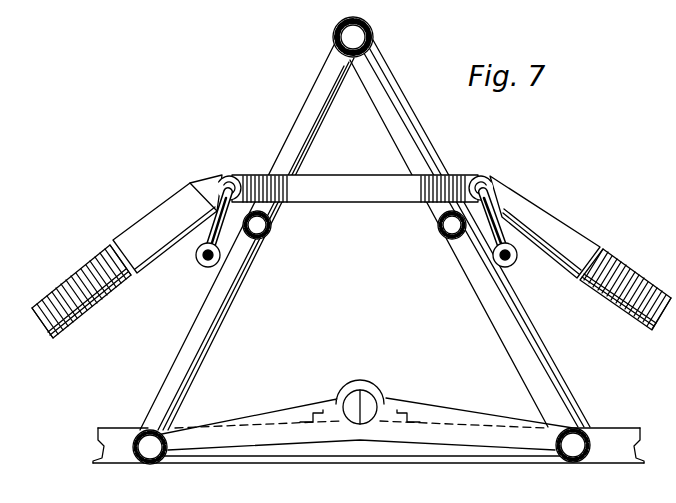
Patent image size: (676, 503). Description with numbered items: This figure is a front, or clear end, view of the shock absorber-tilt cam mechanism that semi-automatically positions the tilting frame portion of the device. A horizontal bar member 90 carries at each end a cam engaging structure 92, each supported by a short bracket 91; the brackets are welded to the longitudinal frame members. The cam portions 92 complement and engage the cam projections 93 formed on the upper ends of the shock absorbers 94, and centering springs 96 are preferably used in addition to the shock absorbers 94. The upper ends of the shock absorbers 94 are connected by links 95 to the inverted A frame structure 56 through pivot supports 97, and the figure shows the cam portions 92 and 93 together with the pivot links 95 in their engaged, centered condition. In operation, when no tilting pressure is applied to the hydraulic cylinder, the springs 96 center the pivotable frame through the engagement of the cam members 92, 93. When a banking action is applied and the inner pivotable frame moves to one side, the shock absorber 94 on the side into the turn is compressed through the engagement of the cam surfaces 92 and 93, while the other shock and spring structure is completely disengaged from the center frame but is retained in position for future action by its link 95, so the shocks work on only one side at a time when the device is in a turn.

The inverted A frame structure 56 is at (200, 342).
The horizontal bar member 90 is at (344, 178).
The short brackets 91 is at (271, 212).
The cam engaging structure 92 is at (224, 176).
The cam projection 93 is at (217, 178).
The shock absorber 94 is at (137, 233).
The link 95 is at (201, 246).
The centering spring 96 is at (48, 294).
The pivot support 97 is at (218, 268).